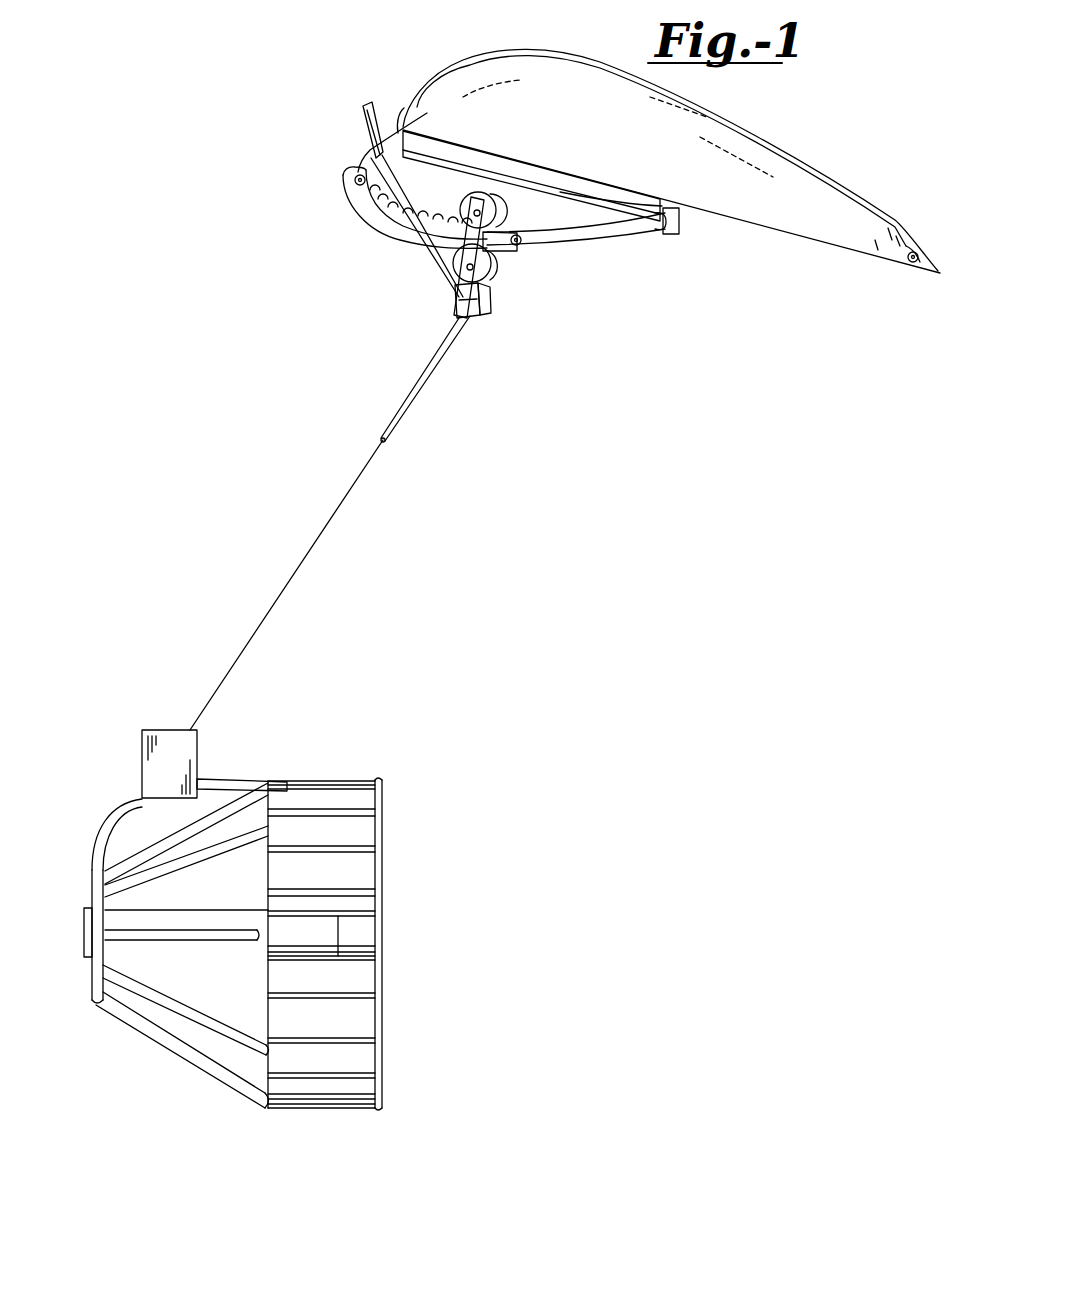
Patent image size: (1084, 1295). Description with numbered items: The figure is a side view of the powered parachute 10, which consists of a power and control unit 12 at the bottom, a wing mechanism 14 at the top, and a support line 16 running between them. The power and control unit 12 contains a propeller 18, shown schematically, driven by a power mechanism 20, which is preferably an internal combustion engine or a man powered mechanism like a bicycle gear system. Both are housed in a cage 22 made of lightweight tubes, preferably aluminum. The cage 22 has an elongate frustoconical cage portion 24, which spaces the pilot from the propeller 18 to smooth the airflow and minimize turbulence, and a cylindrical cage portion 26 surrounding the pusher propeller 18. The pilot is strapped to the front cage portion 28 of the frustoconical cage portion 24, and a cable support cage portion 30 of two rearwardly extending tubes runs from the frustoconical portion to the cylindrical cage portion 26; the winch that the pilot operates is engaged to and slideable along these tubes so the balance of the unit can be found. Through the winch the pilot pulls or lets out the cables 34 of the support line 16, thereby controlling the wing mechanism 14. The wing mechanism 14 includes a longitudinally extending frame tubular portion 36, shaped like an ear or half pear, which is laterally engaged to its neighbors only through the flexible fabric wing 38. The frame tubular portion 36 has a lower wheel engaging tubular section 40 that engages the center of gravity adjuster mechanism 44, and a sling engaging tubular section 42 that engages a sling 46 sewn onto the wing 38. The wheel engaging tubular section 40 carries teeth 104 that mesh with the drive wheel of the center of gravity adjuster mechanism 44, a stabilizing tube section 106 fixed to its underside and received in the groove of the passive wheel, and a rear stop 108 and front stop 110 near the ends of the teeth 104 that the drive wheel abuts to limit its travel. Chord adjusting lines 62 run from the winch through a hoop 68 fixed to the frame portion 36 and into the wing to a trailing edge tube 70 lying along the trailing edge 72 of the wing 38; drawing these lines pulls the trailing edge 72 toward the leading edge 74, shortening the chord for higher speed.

The powered parachute 10 is at (518, 586).
The power and control unit 12 is at (392, 1017).
The wing mechanism 14 is at (814, 247).
The support line 16 is at (328, 518).
The propeller 18 is at (358, 931).
The power mechanism 20 is at (175, 943).
The cage 22 is at (385, 836).
The frustoconical cage portion 24 is at (152, 1043).
The cylindrical cage portion 26 is at (312, 1110).
The front cage portion 28 is at (86, 872).
The cable support cage portion 30 is at (222, 778).
The cables 34 is at (433, 380).
The frame tubular portion 36 is at (592, 240).
The flexible fabric wing 38 is at (782, 135).
The wheel engaging tubular section 40 is at (636, 240).
The sling engaging tubular section 42 is at (401, 125).
The center of gravity adjuster mechanism 44 is at (488, 300).
The sling 46 is at (563, 200).
The chord adjusting lines 62 is at (364, 106).
The hoop 68 is at (366, 126).
The trailing edge tube 70 is at (917, 253).
The trailing edge 72 is at (940, 273).
The leading edge 74 is at (404, 118).
The teeth 104 is at (428, 214).
The stabilizing tube section 106 is at (366, 221).
The rear stop 108 is at (521, 246).
The front stop 110 is at (348, 172).